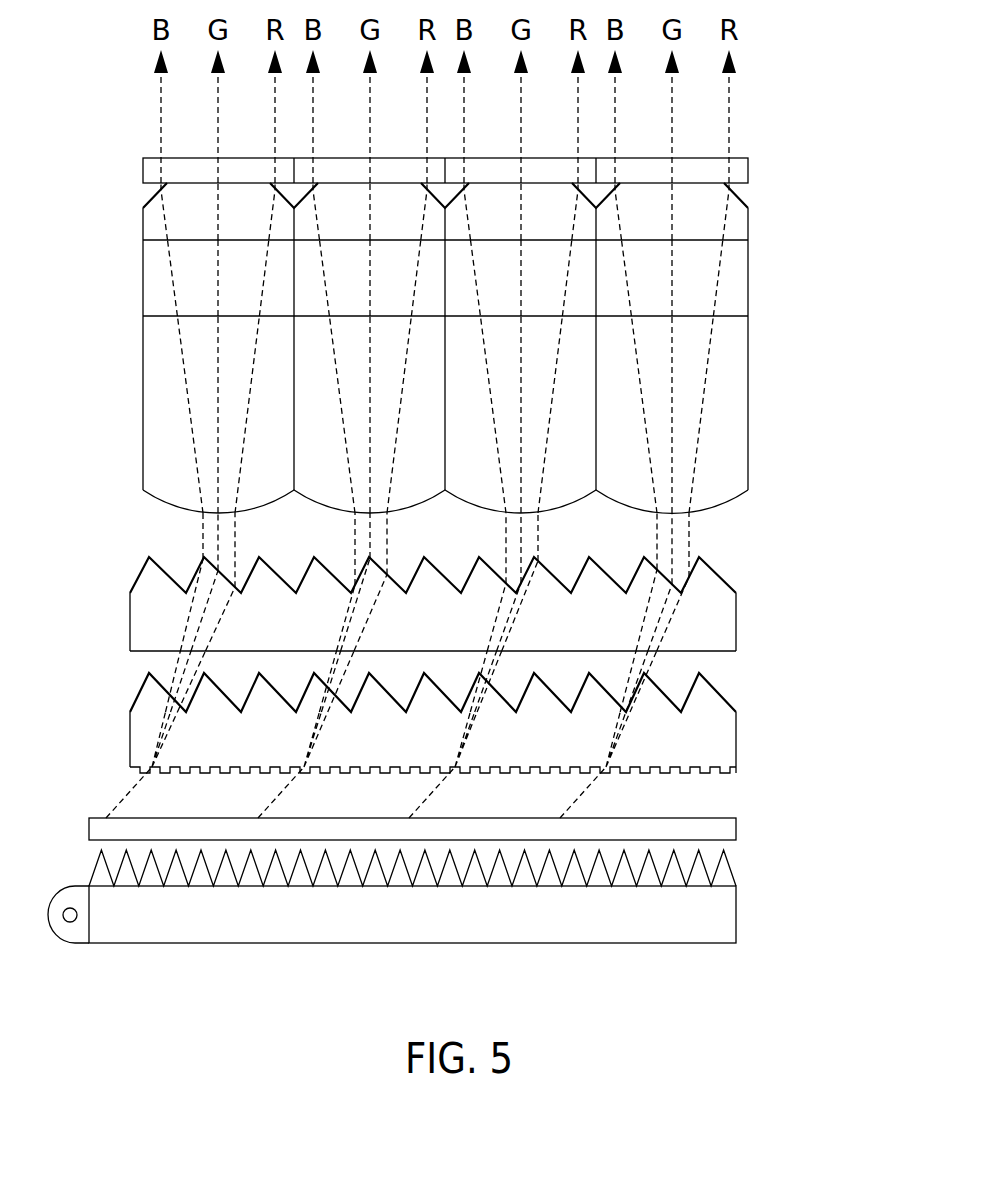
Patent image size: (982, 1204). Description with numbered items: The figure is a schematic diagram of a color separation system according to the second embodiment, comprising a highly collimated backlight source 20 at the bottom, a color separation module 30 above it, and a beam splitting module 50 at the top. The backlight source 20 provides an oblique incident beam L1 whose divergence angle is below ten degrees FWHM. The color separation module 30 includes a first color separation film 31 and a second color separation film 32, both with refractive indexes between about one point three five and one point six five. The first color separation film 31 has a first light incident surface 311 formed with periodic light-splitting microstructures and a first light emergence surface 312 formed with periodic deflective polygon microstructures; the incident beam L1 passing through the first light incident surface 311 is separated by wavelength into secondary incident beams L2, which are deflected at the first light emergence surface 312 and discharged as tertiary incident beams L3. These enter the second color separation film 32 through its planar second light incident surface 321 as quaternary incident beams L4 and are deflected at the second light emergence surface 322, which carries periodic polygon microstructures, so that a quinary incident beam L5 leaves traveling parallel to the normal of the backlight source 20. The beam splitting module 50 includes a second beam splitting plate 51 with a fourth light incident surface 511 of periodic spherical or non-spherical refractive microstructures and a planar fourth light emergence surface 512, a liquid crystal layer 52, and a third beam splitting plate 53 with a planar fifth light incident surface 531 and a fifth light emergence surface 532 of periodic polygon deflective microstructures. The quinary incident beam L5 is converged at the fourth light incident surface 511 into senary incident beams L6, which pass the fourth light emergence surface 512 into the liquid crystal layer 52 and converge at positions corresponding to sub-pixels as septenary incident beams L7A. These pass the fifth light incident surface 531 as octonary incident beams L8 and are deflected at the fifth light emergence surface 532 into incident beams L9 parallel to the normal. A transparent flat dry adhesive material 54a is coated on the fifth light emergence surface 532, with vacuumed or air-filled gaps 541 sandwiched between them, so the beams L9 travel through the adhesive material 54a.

The backlight source 20 is at (750, 817).
The color separation module 30 is at (450, 673).
The first color separation film 31 is at (422, 732).
The first light incident surface 311 is at (130, 772).
The first light emergence surface 312 is at (140, 685).
The second color separation film 32 is at (423, 613).
The second light incident surface 321 is at (130, 651).
The second light emergence surface 322 is at (140, 567).
The beam splitting module 50 is at (469, 334).
The second beam splitting plate 51 is at (737, 416).
The fourth light incident surface 511 is at (158, 505).
The fourth light emergence surface 512 is at (160, 318).
The liquid crystal layer 52 is at (737, 276).
The third beam splitting plate 53 is at (735, 218).
The fifth light incident surface 531 is at (145, 240).
The fifth light emergence surface 532 is at (157, 190).
The gap 541 is at (600, 196).
The adhesive material 54a is at (733, 172).
The incident beam L1 is at (585, 793).
The secondary incident beams L2 is at (625, 738).
The tertiary incident beams L3 is at (655, 660).
The quaternary incident beams L4 is at (672, 612).
The quinary incident beam L5 is at (690, 535).
The senary incident beams L6 is at (707, 368).
The septenary incident beams L7A is at (718, 297).
The octonary incident beams L8 is at (725, 228).
The incident beams L9 is at (730, 112).